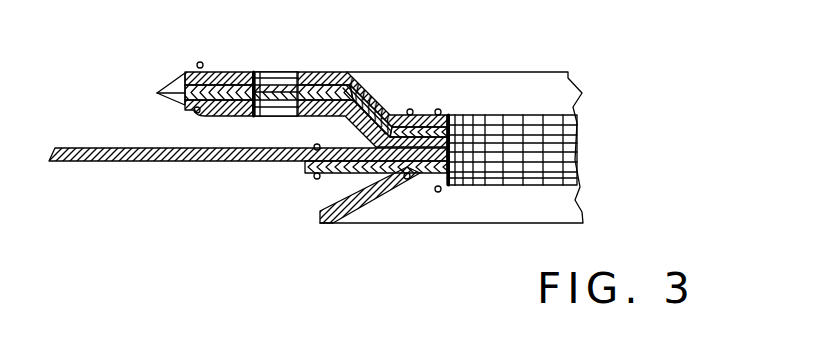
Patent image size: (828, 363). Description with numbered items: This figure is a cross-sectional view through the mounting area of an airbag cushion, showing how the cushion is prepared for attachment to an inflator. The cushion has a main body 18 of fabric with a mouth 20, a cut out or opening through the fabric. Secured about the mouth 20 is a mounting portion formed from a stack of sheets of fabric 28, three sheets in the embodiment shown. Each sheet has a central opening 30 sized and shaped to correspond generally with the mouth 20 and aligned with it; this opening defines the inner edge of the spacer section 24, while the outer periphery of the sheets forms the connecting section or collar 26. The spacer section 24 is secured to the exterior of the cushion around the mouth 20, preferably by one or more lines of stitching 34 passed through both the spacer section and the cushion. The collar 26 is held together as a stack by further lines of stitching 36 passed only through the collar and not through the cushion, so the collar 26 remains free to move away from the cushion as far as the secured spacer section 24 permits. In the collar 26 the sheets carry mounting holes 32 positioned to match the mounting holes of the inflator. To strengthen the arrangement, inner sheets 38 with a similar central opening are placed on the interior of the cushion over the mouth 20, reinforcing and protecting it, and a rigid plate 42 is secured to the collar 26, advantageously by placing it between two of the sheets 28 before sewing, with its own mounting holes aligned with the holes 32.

The main body 18 is at (203, 163).
The mouth 20 is at (580, 157).
The spacer section 24 is at (428, 113).
The collar 26 is at (238, 72).
The sheets of fabric 28 is at (158, 93).
The central opening 30 is at (570, 122).
The mounting holes 32 is at (286, 72).
The lines of stitching 34 is at (412, 108).
The lines of stitching 36 is at (201, 62).
The inner sheets 38 is at (318, 216).
The rigid plate 42 is at (218, 117).